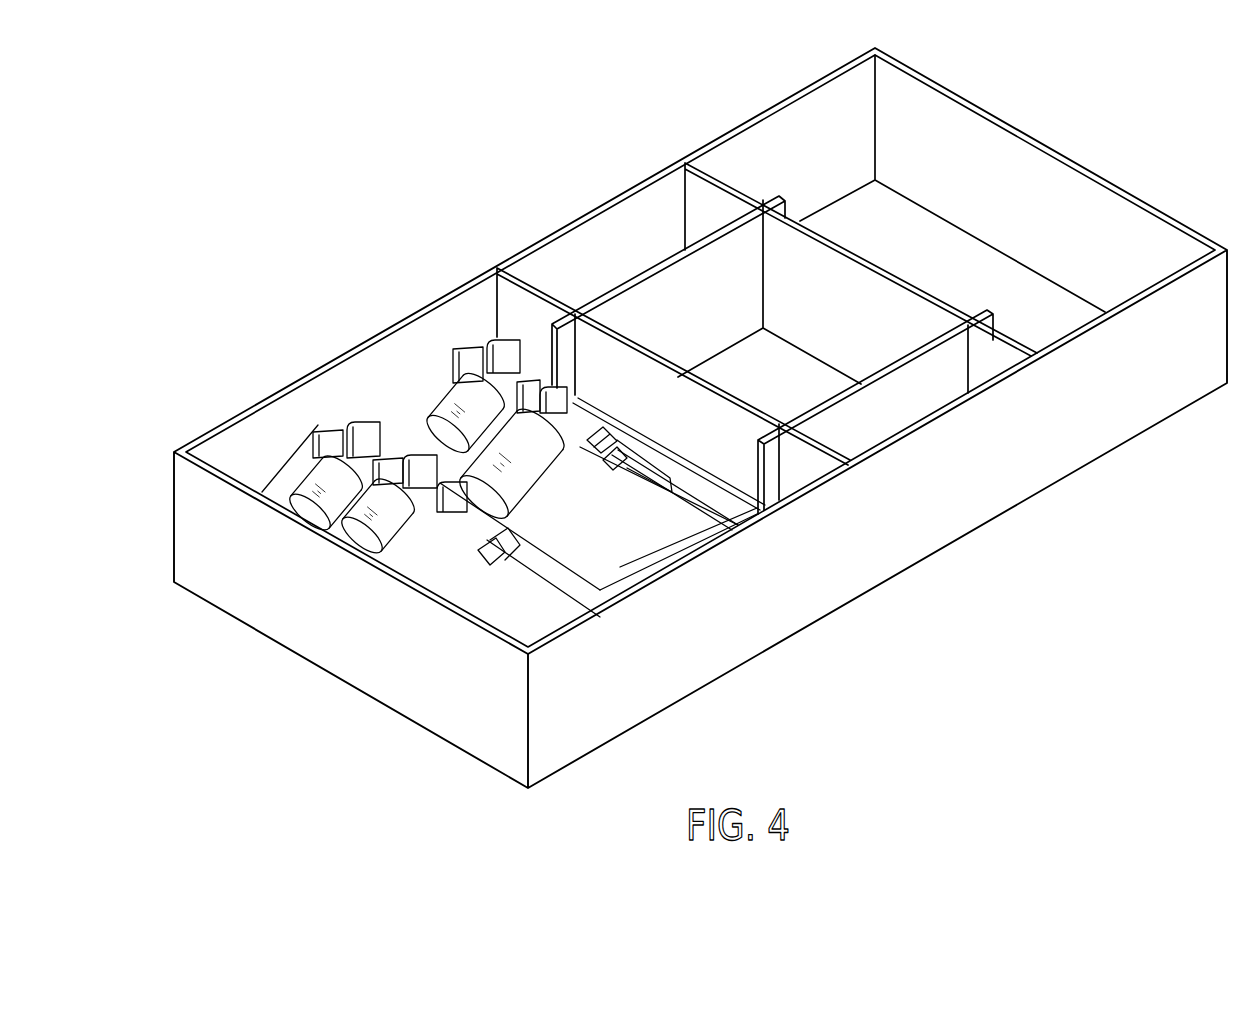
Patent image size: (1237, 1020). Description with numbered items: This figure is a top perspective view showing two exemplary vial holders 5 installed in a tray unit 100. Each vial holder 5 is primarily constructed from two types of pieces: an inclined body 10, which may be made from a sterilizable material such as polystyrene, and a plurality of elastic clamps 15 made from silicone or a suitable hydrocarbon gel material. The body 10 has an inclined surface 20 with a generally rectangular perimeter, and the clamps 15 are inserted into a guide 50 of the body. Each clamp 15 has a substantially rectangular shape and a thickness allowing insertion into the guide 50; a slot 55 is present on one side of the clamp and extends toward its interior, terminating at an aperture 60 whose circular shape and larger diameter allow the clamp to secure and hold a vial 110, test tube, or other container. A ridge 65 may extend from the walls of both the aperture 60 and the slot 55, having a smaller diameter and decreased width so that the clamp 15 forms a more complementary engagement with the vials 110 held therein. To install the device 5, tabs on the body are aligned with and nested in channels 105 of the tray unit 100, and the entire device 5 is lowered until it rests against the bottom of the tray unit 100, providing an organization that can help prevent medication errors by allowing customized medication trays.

The vial holder 5 is at (300, 319).
The inclined body 10 is at (569, 512).
The clamp 15 is at (463, 363).
The inclined surface 20 is at (627, 568).
The guide 50 is at (703, 523).
The slot 55 is at (620, 440).
The aperture 60 is at (480, 548).
The ridge 65 is at (615, 455).
The tray unit 100 is at (1111, 399).
The channels 105 is at (225, 423).
The vial 110 is at (527, 482).